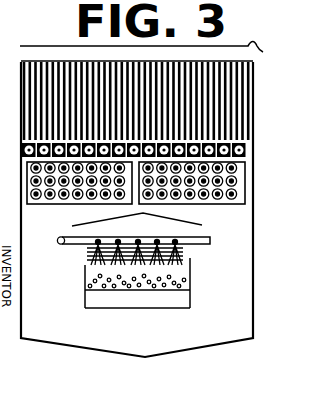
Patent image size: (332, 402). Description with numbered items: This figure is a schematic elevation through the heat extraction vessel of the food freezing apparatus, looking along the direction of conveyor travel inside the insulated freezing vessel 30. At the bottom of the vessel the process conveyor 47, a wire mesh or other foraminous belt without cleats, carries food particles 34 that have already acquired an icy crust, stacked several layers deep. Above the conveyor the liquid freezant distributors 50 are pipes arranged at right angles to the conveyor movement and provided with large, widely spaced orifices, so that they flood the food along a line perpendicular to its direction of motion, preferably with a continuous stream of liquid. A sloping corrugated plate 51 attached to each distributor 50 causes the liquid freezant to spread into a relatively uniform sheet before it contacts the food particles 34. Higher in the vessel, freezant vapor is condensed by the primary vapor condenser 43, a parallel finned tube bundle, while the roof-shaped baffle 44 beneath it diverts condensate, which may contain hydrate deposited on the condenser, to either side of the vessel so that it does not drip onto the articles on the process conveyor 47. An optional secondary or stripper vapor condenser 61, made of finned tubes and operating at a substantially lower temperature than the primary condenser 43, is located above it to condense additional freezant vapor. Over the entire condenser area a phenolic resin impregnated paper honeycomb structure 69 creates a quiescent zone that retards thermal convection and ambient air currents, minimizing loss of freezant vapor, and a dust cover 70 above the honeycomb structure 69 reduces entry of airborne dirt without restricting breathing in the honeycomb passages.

The insulated freezing vessel 30 is at (256, 254).
The food particles 34 is at (191, 278).
The primary vapor condenser 43 is at (241, 181).
The roof-shaped baffle 44 is at (183, 220).
The process conveyor 47 is at (168, 300).
The liquid freezant distributors 50 is at (210, 241).
The sloping corrugated plate 51 is at (87, 249).
The secondary vapor condenser 61 is at (247, 148).
The honeycomb structure 69 is at (250, 98).
The dust cover 70 is at (154, 56).